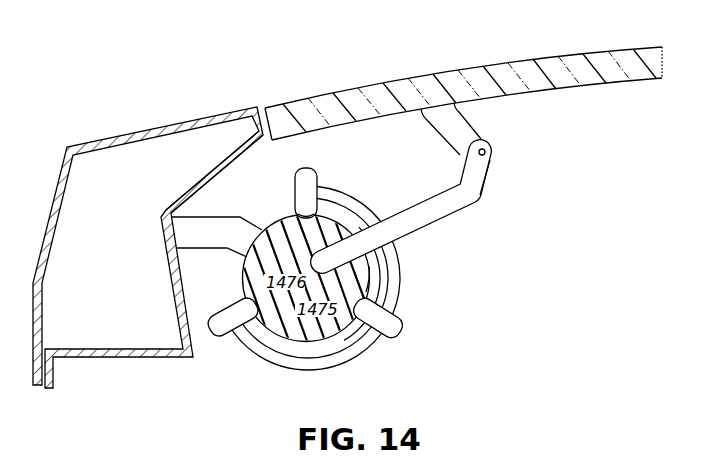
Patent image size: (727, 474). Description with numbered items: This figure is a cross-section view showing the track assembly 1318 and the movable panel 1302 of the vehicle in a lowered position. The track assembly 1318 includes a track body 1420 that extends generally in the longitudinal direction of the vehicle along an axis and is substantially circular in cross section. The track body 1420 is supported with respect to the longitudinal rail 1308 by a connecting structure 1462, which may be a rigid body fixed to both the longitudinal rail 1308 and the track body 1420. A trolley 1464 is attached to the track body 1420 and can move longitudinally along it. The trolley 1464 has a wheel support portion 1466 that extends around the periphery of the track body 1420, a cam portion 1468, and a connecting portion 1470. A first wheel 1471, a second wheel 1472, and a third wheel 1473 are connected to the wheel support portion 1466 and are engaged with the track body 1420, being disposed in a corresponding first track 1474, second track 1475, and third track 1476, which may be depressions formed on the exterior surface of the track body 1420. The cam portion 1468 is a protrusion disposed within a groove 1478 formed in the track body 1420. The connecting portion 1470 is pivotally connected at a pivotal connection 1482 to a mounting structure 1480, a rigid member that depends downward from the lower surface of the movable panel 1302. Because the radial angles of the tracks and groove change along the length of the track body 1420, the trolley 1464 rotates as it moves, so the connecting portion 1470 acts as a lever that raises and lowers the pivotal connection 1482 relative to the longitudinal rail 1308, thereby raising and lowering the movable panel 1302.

The movable panel 1302 is at (598, 54).
The longitudinal rail 1308 is at (107, 137).
The track assembly 1318 is at (388, 352).
The track body 1420 is at (242, 281).
The connecting structure 1462 is at (183, 214).
The trolley 1464 is at (463, 217).
The wheel support portion 1466 is at (339, 193).
The cam portion 1468 is at (374, 252).
The connecting portion 1470 is at (484, 178).
The first wheel 1471 is at (306, 167).
The second wheel 1472 is at (402, 314).
The third wheel 1473 is at (230, 337).
The first track 1474 is at (303, 217).
The second track 1475 is at (351, 298).
The third track 1476 is at (255, 290).
The groove 1478 is at (371, 275).
The mounting structure 1480 is at (476, 123).
The pivotal connection 1482 is at (487, 144).